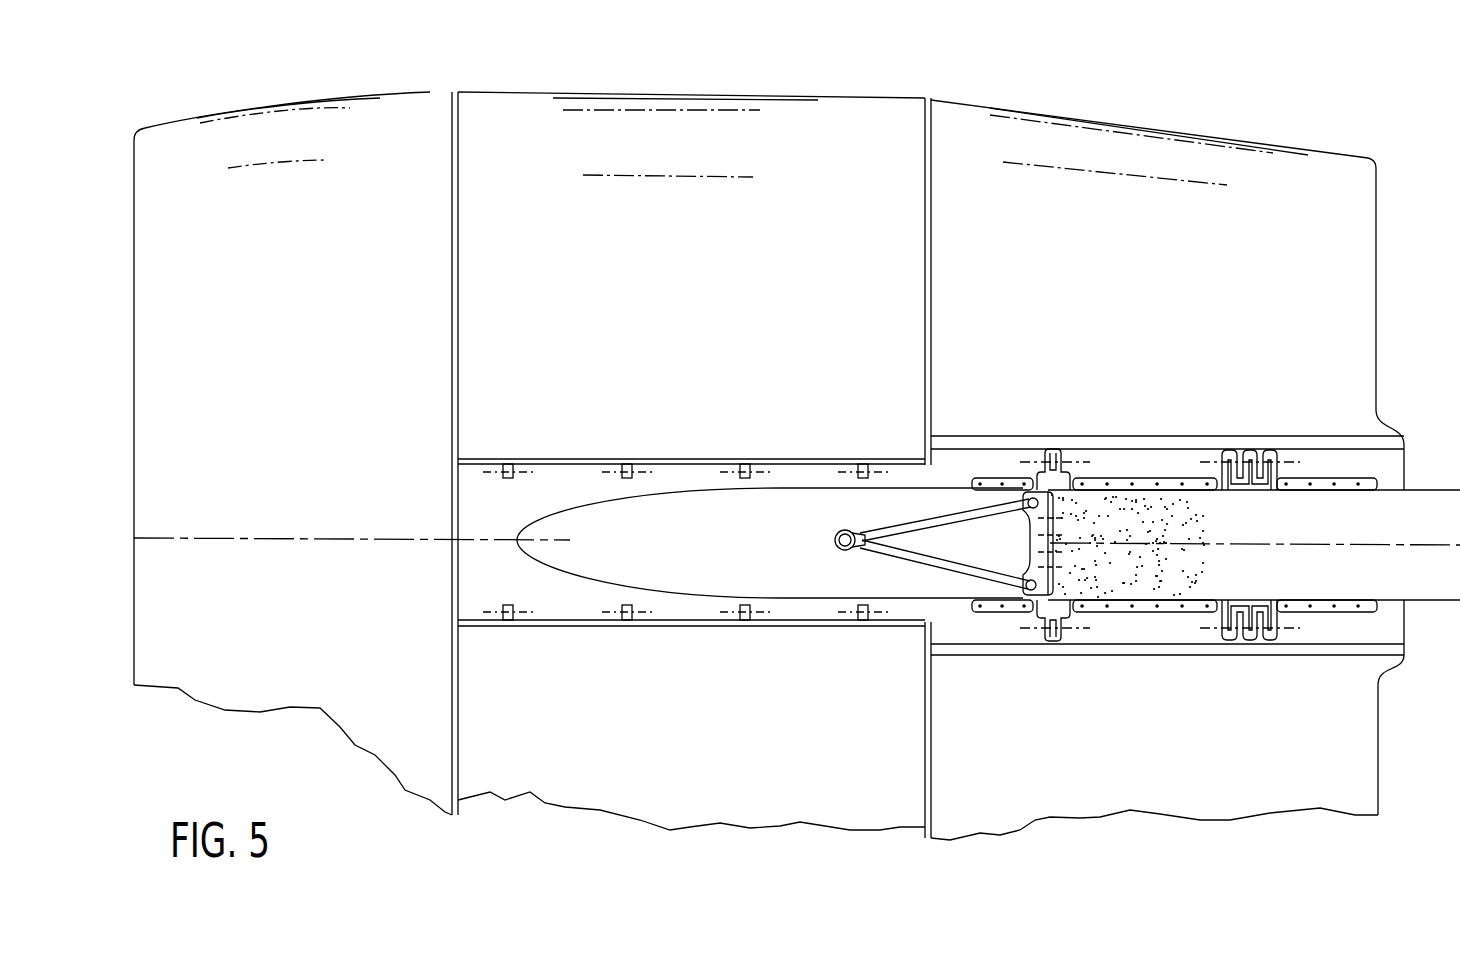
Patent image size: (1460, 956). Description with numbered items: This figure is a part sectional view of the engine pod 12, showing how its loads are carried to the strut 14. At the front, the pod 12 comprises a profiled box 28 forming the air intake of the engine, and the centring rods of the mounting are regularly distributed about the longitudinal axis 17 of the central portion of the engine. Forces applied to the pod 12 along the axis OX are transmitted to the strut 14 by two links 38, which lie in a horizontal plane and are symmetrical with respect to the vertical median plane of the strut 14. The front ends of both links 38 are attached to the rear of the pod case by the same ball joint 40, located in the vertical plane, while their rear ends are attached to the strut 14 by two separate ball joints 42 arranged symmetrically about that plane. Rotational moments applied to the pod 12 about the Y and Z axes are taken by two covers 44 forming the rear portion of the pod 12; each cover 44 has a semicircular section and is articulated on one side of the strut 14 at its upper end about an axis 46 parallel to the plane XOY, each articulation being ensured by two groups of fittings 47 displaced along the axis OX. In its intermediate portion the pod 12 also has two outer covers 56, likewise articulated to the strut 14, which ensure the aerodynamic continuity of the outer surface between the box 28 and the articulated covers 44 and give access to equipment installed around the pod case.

The pod 12 is at (430, 93).
The strut 14 is at (1408, 510).
The longitudinal axis 17 is at (195, 538).
The profiled box 28 is at (213, 150).
The links 38 is at (930, 560).
The ball joint 40 is at (828, 545).
The ball joints 42 is at (1019, 495).
The covers 44 is at (1195, 153).
The axis 46 is at (1274, 450).
The fittings 47 is at (1067, 453).
The outer covers 56 is at (815, 148).